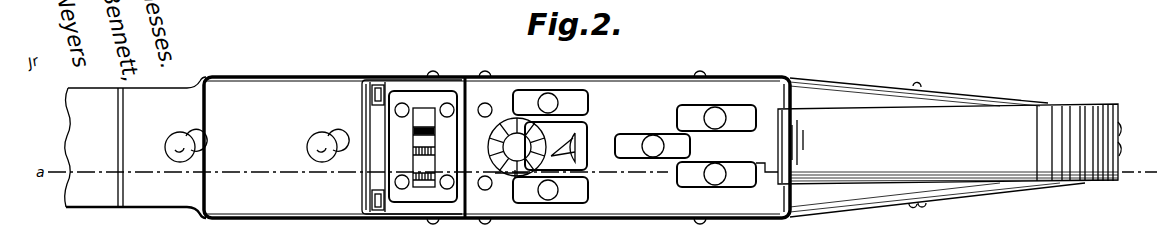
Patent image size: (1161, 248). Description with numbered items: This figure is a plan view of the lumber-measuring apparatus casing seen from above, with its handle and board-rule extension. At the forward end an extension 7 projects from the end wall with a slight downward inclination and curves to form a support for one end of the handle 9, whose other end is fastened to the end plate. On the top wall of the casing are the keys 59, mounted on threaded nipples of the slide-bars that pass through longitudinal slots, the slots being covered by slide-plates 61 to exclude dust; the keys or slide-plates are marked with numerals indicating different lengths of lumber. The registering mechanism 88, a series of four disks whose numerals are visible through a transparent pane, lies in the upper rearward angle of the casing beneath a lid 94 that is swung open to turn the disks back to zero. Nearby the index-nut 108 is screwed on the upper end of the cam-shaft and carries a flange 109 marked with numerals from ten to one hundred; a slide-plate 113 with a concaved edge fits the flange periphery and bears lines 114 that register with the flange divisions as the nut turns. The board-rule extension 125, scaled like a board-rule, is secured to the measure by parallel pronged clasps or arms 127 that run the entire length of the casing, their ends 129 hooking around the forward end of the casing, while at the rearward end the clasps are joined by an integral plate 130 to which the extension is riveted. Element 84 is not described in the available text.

The extension 7 is at (919, 92).
The handle 9 is at (949, 144).
The keys 59 is at (628, 165).
The slide-plates 61 is at (634, 146).
The indicator plate 84 is at (423, 146).
The registering mechanism 88 is at (424, 147).
The lid 94 is at (446, 208).
The index-nut 108 is at (517, 148).
The flange 109 is at (497, 136).
The slide-plate 113 is at (545, 140).
The lines 114 is at (576, 147).
The board-rule extension 125 is at (88, 192).
The arms 127 is at (497, 152).
The ends 129 is at (790, 196).
The integral plate 130 is at (207, 147).